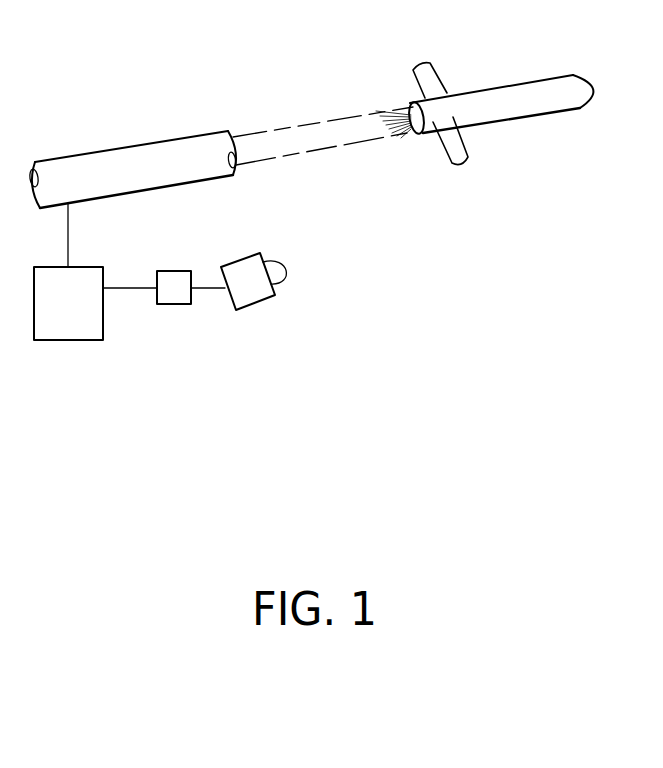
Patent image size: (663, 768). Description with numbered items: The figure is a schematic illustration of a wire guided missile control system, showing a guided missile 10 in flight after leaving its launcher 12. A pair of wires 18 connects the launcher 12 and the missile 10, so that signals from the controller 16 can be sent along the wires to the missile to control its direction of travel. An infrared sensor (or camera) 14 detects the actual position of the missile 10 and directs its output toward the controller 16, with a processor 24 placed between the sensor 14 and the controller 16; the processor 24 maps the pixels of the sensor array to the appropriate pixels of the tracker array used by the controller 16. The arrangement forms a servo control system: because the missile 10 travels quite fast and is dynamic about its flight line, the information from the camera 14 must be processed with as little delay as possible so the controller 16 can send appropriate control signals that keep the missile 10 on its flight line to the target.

The guided missile 10 is at (497, 87).
The launcher 12 is at (158, 140).
The infrared sensor 14 is at (257, 295).
The controller 16 is at (68, 340).
The pair of wires 18 is at (327, 147).
The processor 24 is at (174, 298).